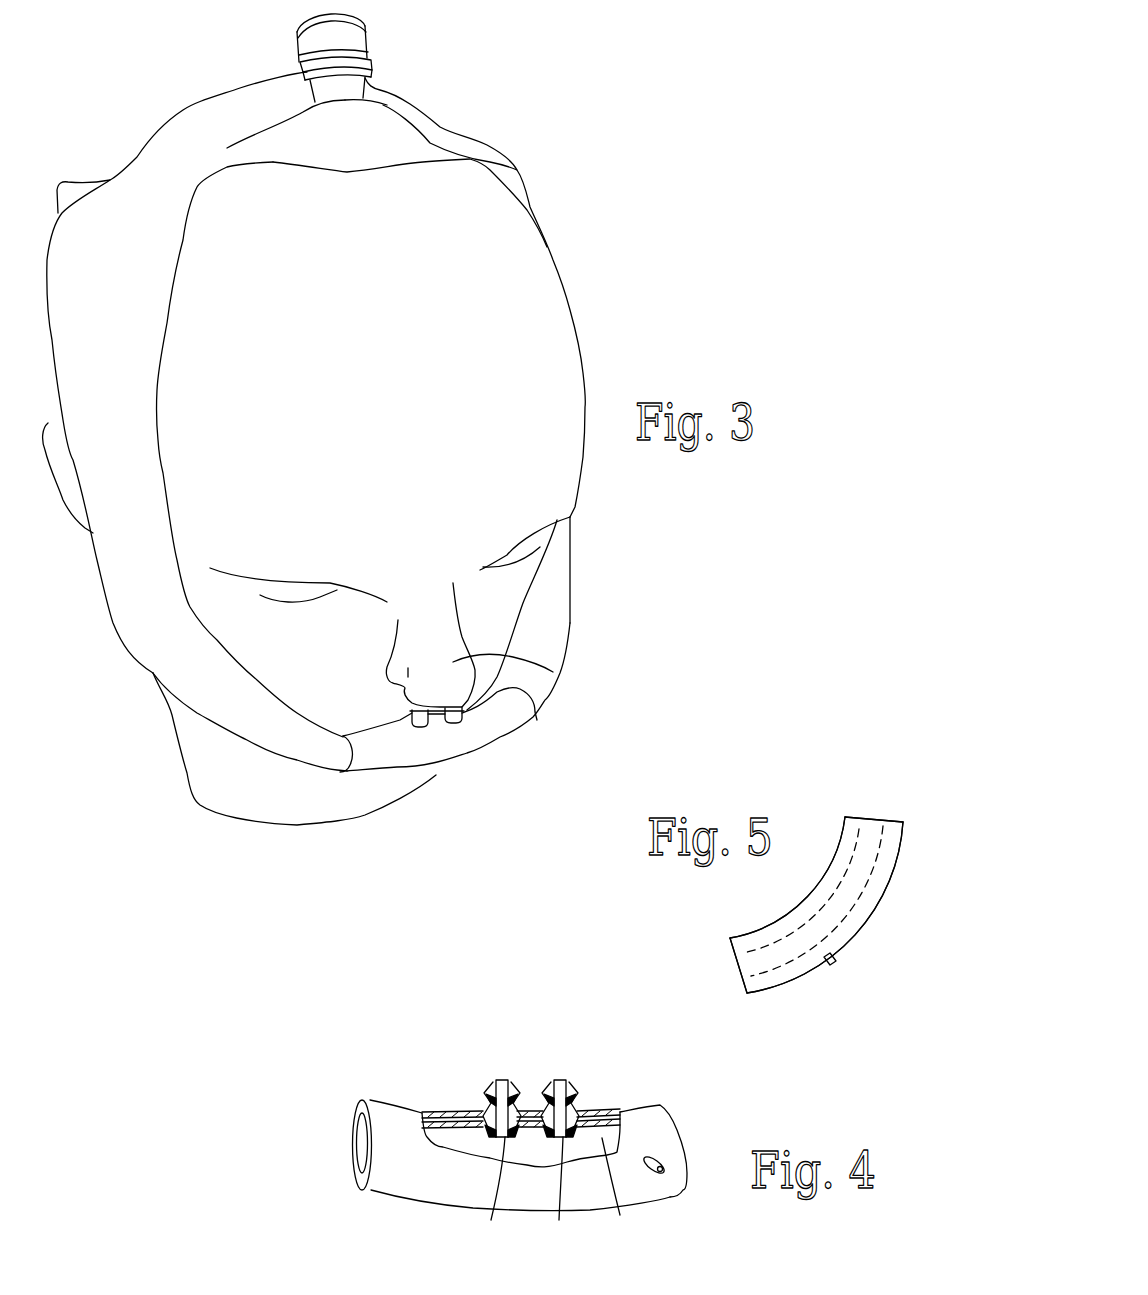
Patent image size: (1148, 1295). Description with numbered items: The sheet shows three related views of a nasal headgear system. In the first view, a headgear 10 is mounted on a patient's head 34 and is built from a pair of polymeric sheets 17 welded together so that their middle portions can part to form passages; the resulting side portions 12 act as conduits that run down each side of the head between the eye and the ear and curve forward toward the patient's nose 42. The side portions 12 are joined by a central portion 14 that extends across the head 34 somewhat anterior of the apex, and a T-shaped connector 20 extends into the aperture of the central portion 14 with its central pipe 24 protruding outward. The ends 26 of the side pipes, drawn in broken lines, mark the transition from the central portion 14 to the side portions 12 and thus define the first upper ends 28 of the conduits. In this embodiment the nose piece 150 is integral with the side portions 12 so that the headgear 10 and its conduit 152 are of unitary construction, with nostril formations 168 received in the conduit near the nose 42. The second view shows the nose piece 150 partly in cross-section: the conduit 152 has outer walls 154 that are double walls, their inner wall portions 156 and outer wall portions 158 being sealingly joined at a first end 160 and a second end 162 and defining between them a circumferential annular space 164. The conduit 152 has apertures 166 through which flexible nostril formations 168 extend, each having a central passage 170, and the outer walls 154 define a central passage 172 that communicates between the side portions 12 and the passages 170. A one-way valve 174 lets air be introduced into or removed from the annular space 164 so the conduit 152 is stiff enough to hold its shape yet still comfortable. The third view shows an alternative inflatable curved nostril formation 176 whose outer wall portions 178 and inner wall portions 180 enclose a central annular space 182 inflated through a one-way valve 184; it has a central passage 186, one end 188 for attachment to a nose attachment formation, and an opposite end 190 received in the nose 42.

In FIG. 3, the headgear 10 is at (537, 137).
In FIG. 3, the side portions 12 is at (150, 460).
In FIG. 3, the central portion 14 is at (405, 118).
In FIG. 3, the polymeric sheets 17 is at (137, 170).
In FIG. 3, the T-shaped connector 20 is at (281, 53).
In FIG. 3, the central pipe 24 is at (336, 92).
In FIG. 3, the ends of the side pipes 26 is at (293, 133).
In FIG. 3, the first upper ends 28 is at (269, 128).
In FIG. 3, the patient's head 34 is at (553, 325).
In FIG. 3, the patient's nose 42 is at (553, 672).
In FIG. 3, the nose piece 150 is at (461, 735).
In FIG. 4, the nose piece 150 is at (498, 1131).
In FIG. 3, the conduit 152 is at (443, 757).
In FIG. 4, the conduit 152 is at (417, 1190).
In FIG. 4, the outer walls 154 is at (542, 1076).
In FIG. 4, the inner wall portions 156 is at (621, 1194).
In FIG. 4, the outer wall portions 158 is at (610, 1112).
In FIG. 4, the first end 160 is at (328, 1130).
In FIG. 4, the second end 162 is at (686, 1125).
In FIG. 4, the annular space 164 is at (437, 1113).
In FIG. 3, the apertures 166 is at (462, 716).
In FIG. 4, the apertures 166 is at (485, 1115).
In FIG. 3, the nostril formations 168 is at (410, 716).
In FIG. 4, the nostril formations 168 is at (498, 1080).
In FIG. 4, the central passage 170 is at (530, 1195).
In FIG. 4, the central passage 172 is at (347, 1157).
In FIG. 4, the one-way valve 174 is at (657, 1180).
In FIG. 5, the inflatable curved nostril formation 176 is at (867, 893).
In FIG. 5, the outer wall portions 178 is at (880, 887).
In FIG. 5, the inner wall portions 180 is at (891, 866).
In FIG. 5, the central enclosed annular space 182 is at (860, 923).
In FIG. 5, the one-way valve 184 is at (827, 970).
In FIG. 5, the central passage 186 is at (733, 956).
In FIG. 5, the one end 188 is at (803, 874).
In FIG. 5, the opposite end 190 is at (853, 802).